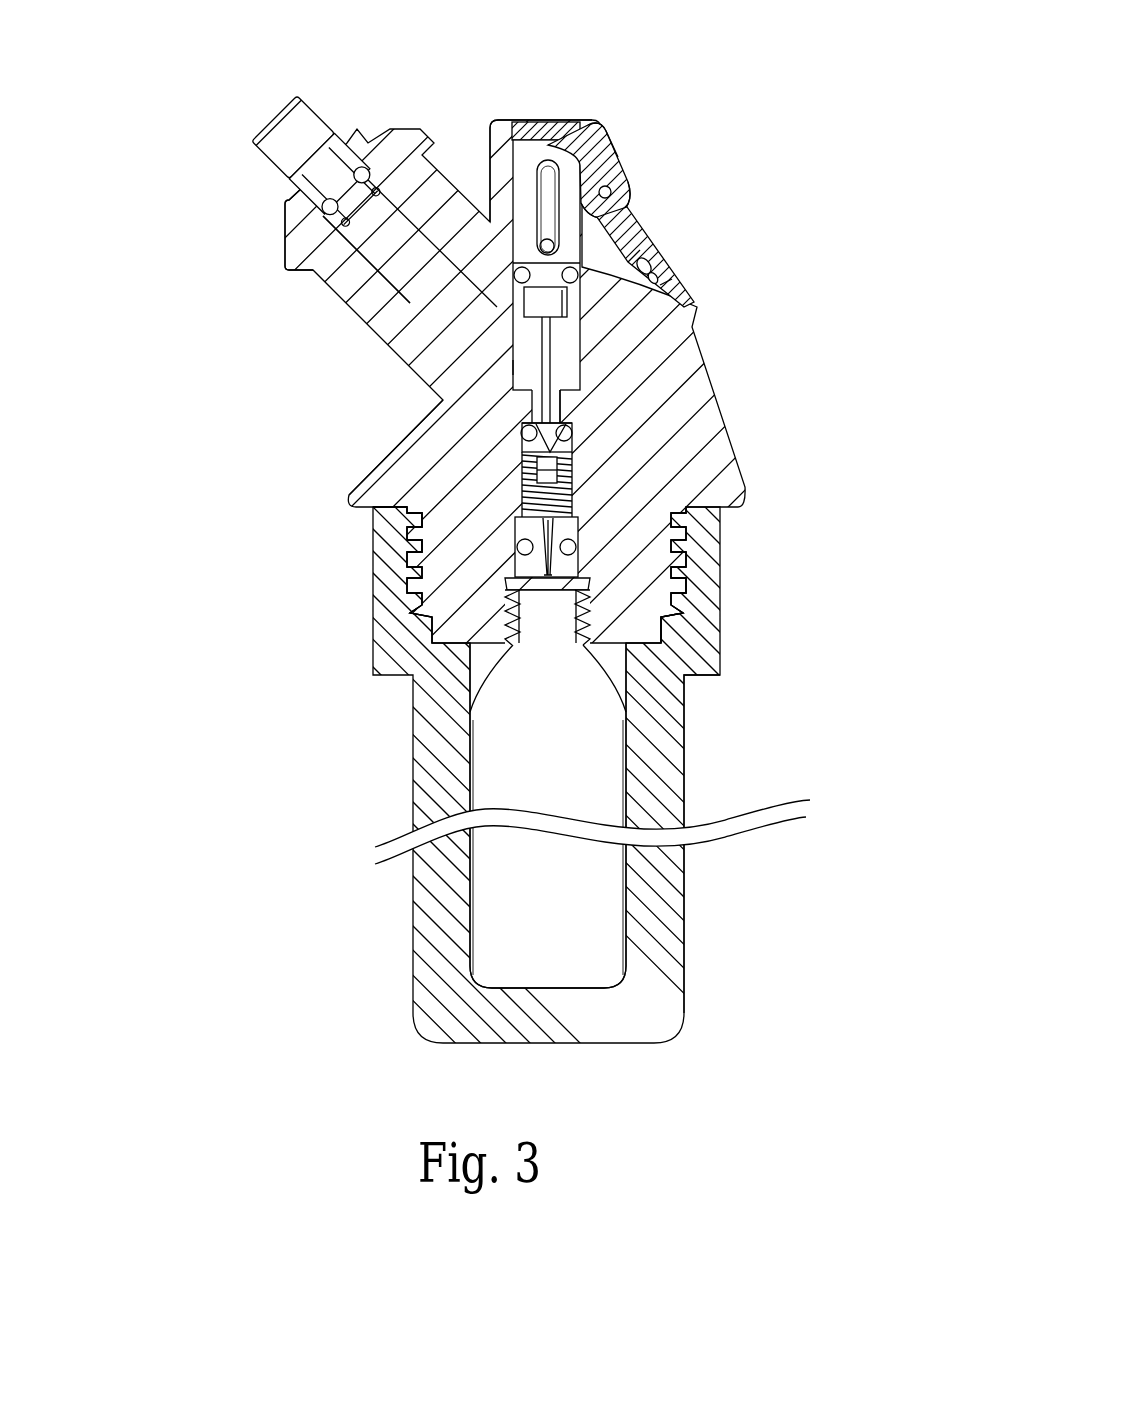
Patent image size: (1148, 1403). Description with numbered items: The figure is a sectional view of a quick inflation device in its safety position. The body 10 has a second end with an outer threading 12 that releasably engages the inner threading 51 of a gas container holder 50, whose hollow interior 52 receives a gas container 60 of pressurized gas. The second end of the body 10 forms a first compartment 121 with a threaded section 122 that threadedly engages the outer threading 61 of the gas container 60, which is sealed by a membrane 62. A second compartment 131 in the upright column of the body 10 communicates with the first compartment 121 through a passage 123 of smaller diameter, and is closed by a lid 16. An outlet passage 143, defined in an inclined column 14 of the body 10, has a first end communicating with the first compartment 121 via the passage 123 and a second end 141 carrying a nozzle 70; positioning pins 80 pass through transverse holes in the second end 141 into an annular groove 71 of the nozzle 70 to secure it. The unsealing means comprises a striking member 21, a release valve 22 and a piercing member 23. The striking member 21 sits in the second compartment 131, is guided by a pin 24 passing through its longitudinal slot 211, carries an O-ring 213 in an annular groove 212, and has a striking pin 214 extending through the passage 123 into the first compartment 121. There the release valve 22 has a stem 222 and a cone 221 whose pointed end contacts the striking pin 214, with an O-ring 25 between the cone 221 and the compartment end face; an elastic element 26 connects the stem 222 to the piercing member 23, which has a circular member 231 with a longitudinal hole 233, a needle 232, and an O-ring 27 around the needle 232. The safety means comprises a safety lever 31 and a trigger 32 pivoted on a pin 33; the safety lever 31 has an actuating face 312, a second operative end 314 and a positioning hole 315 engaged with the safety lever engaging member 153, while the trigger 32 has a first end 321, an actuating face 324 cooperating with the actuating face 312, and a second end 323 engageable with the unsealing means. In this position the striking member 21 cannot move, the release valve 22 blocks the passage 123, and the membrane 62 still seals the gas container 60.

The body 10 is at (375, 462).
The outer threading 12 is at (687, 570).
The first compartment 121 is at (640, 590).
The threaded section 122 is at (650, 615).
The passage 123 is at (562, 403).
The second compartment 131 is at (523, 392).
The inclined column 14 is at (397, 243).
The second end of the outlet passage 141 is at (297, 247).
The outlet passage 143 is at (373, 297).
The safety lever engaging member 153 is at (658, 272).
The lid 16 is at (533, 128).
The striking member 21 is at (527, 193).
The longitudinal slot 211 is at (545, 230).
The annular groove 212 is at (525, 371).
The O-ring 213 is at (582, 288).
The striking pin 214 is at (552, 360).
The release valve 22 is at (570, 432).
The cone 221 is at (540, 438).
The stem 222 is at (572, 443).
The piercing member 23 is at (580, 528).
The circular member 231 is at (377, 507).
The needle 232 is at (512, 543).
The longitudinal hole 233 is at (512, 532).
The pin 24 is at (580, 276).
The O-ring 25 is at (566, 427).
The elastic element 26 is at (558, 470).
The O-ring 27 is at (576, 548).
The safety lever 31 is at (655, 226).
The actuating face 312 is at (634, 200).
The second operative end 314 is at (666, 286).
The positioning hole 315 is at (650, 258).
The trigger 32 is at (617, 162).
The first end of the trigger 321 is at (632, 208).
The second end of the trigger 323 is at (592, 125).
The actuating face 324 is at (607, 148).
The pin 33 is at (612, 190).
The gas container holder 50 is at (418, 750).
The inner threading 51 is at (417, 545).
The hollow interior 52 is at (613, 665).
The gas container 60 is at (588, 930).
The outer threading 61 is at (507, 587).
The membrane 62 is at (512, 632).
The nozzle 70 is at (287, 108).
The annular groove 71 is at (343, 192).
The positioning pins 80 is at (360, 168).